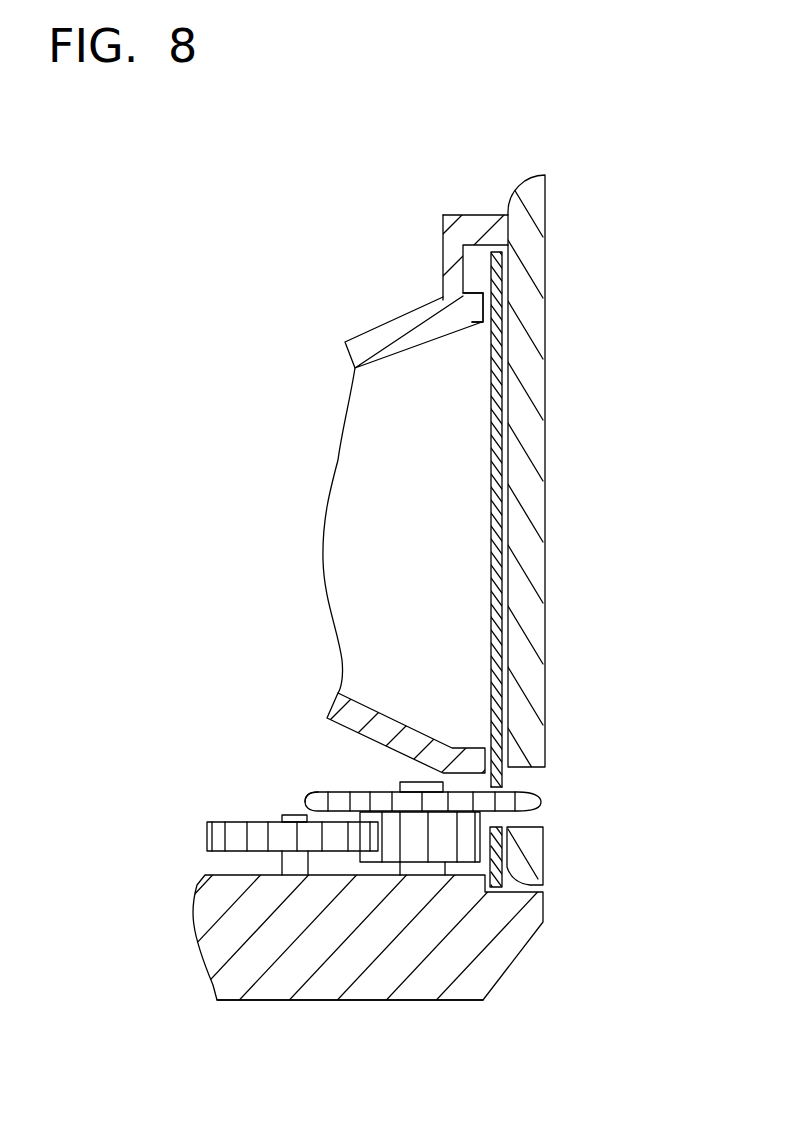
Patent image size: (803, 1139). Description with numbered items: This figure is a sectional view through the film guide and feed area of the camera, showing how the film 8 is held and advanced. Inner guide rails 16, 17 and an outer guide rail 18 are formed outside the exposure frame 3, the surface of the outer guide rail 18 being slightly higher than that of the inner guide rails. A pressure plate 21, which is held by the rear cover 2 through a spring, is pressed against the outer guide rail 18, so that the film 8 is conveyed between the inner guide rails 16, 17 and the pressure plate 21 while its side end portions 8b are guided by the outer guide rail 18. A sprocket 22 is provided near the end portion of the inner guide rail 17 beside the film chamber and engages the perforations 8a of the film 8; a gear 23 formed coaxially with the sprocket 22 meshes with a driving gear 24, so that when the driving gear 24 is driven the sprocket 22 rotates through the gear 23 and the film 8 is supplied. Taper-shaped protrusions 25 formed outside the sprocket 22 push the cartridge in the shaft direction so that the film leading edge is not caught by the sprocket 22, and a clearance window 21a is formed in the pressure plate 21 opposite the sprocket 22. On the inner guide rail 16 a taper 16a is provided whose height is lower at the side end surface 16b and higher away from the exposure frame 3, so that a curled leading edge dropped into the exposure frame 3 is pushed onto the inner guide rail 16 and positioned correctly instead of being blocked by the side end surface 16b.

The rear cover 2 is at (468, 983).
The exposure frame 3 is at (383, 340).
The film 8 is at (490, 490).
The perforations 8a is at (538, 802).
The side end portions of the film 8b is at (494, 250).
The inner guide rail 16 is at (484, 303).
The taper 16a is at (481, 321).
The side end surface of the inner guide rail 16b is at (466, 327).
The inner guide rail 17 is at (488, 762).
The outer guide rail 18 is at (508, 228).
The pressure plate 21 is at (544, 415).
The clearance window 21a is at (530, 827).
The sprocket 22 is at (318, 797).
The gear 23 is at (415, 852).
The driving gear 24 is at (207, 833).
The taper-shaped protrusions 25 is at (544, 897).